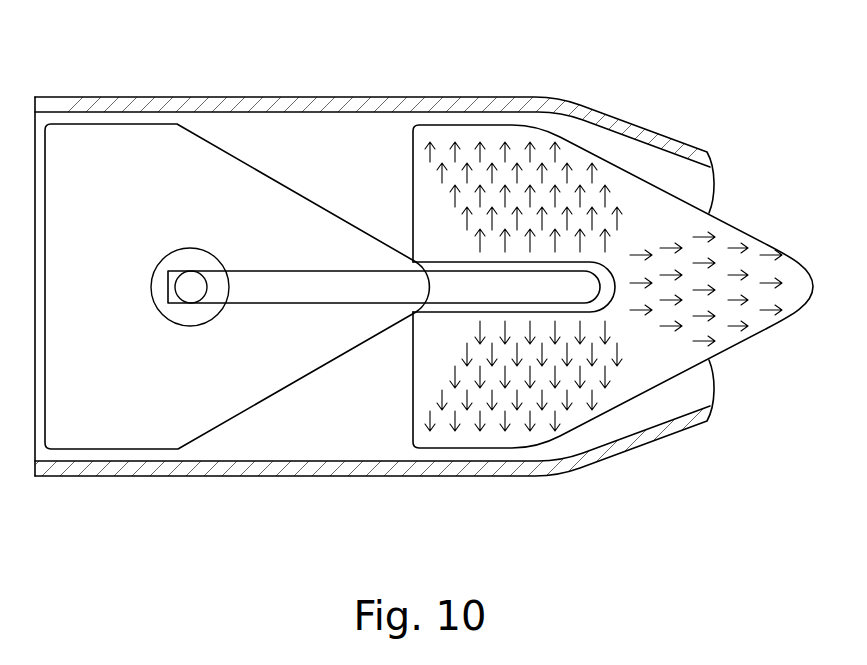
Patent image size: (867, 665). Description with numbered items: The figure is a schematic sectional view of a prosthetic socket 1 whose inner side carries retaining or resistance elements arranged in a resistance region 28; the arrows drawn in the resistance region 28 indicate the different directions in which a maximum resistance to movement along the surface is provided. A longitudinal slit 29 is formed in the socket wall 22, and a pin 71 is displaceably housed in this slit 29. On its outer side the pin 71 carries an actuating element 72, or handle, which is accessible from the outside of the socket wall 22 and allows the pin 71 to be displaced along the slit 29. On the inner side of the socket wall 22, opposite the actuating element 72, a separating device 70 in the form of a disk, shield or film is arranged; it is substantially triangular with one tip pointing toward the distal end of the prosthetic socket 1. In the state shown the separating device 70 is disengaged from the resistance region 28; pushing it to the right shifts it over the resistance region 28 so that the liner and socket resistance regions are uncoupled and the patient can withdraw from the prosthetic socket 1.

The prosthetic socket 1 is at (218, 97).
The socket wall 22 is at (372, 150).
The resistance region 28 is at (567, 193).
The longitudinal slit 29 is at (455, 285).
The separating device 70 is at (267, 203).
The pin 71 is at (188, 276).
The actuating element 72 is at (182, 313).